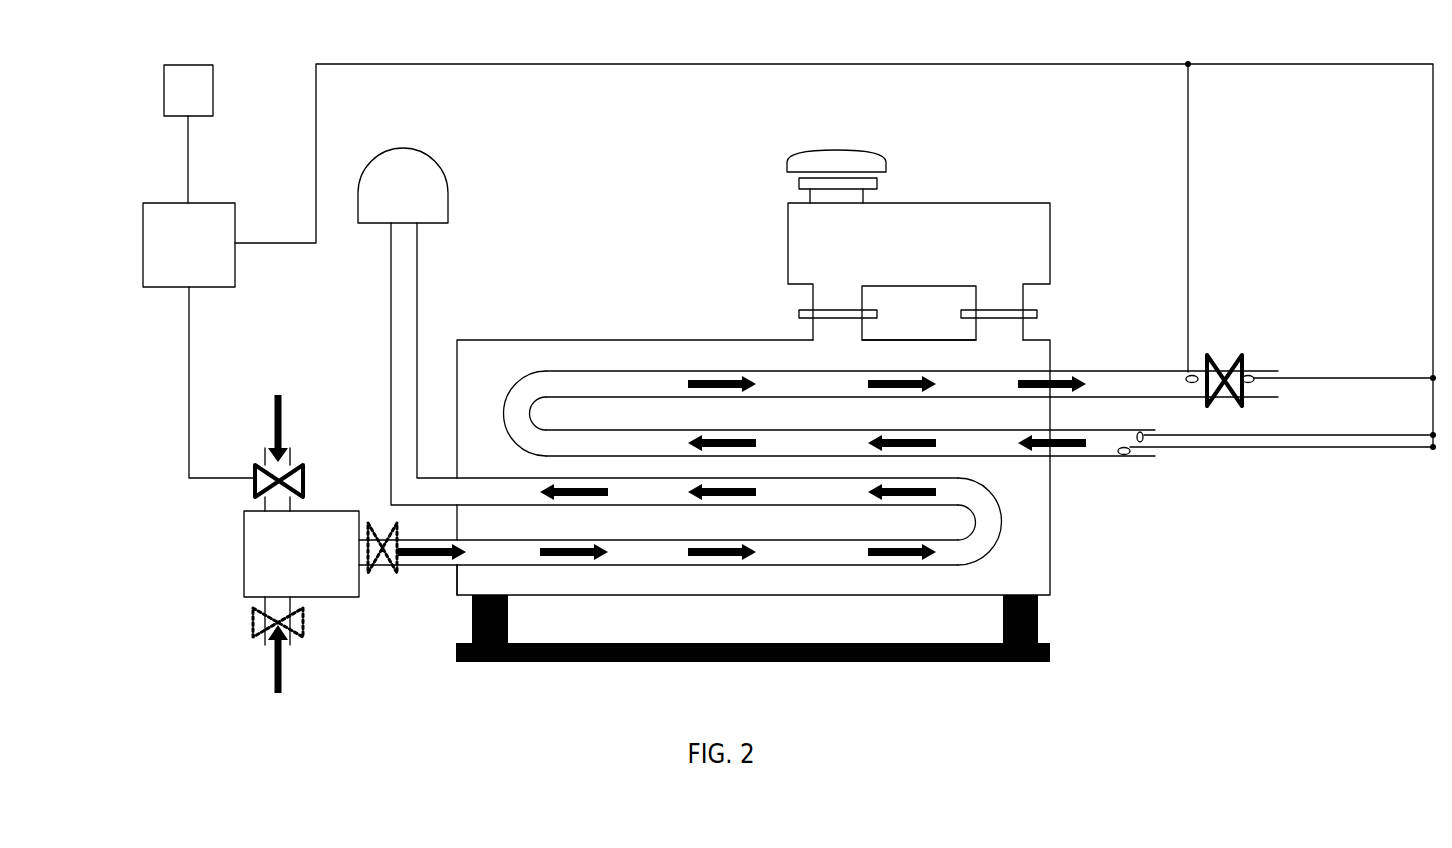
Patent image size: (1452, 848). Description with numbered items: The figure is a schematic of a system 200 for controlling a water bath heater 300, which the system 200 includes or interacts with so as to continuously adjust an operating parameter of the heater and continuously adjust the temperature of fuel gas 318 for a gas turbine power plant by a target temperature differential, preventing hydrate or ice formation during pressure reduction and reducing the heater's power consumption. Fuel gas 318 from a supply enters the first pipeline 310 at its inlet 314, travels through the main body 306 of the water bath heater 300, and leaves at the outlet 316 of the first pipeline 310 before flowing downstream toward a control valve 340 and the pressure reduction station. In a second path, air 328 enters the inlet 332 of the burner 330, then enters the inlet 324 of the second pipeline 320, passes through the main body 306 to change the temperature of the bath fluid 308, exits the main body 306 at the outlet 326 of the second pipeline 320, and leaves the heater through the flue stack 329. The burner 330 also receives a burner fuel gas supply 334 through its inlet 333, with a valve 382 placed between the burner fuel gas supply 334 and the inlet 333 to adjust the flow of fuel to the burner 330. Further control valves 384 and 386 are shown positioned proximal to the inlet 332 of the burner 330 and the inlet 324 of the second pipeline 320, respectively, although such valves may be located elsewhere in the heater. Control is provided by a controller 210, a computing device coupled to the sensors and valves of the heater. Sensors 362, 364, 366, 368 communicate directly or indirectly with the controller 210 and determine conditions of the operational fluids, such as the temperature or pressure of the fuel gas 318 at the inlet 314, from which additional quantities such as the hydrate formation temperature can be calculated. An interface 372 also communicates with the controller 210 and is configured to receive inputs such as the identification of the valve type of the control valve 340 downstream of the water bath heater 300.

The system 200 is at (137, 152).
The controller 210 is at (204, 251).
The interface 372 is at (203, 101).
The water bath heater 300 is at (1132, 672).
The main body 306 is at (527, 340).
The bath fluid 308 is at (576, 355).
The first pipeline 310 is at (1013, 372).
The inlet 314 is at (1052, 457).
The outlet 316 is at (1055, 368).
The fuel gas 318 is at (1078, 450).
The second pipeline 320 is at (640, 565).
The inlet 324 is at (453, 567).
The outlet 326 is at (452, 478).
The air 328 is at (273, 662).
The flue stack 329 is at (418, 177).
The burner 330 is at (316, 564).
The inlet 332 is at (263, 598).
The inlet 333 is at (263, 507).
The burner fuel gas supply 334 is at (273, 412).
The control valve 340 is at (1227, 363).
The sensor 362 is at (1130, 455).
The sensor 364 is at (1145, 440).
The sensor 366 is at (1195, 372).
The sensor 368 is at (1250, 372).
The valve 382 is at (258, 483).
The control valve 384 is at (260, 628).
The control valve 386 is at (383, 530).